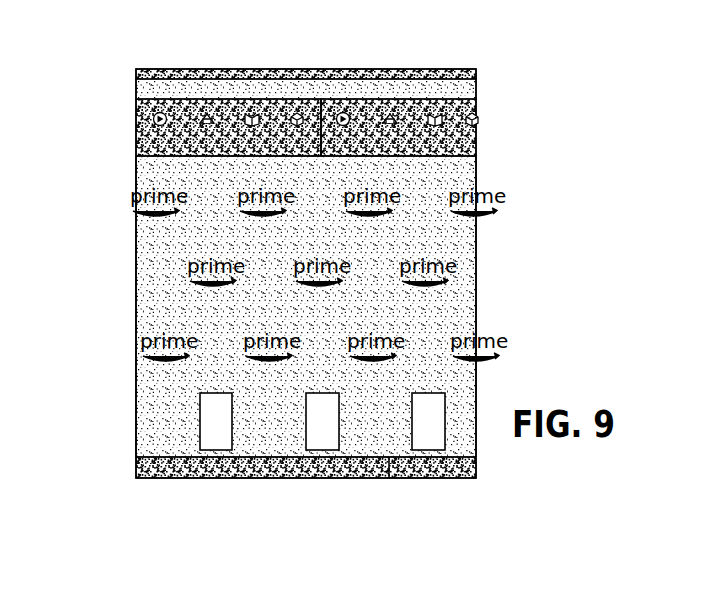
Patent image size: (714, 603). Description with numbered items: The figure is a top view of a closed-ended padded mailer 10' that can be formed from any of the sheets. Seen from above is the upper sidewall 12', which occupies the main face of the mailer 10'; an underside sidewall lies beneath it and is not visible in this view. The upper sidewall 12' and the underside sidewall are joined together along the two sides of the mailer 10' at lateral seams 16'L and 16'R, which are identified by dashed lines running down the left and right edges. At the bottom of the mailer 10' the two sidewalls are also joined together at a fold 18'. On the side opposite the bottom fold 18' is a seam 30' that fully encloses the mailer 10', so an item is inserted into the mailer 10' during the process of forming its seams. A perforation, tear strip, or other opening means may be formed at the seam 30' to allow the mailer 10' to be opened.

The closed-ended padded mailer 10' is at (352, 273).
The seam 30' is at (300, 53).
The lateral seam 16'L is at (172, 278).
The lateral seam 16'R is at (455, 278).
The upper sidewall 12' is at (355, 306).
The fold 18' is at (306, 511).